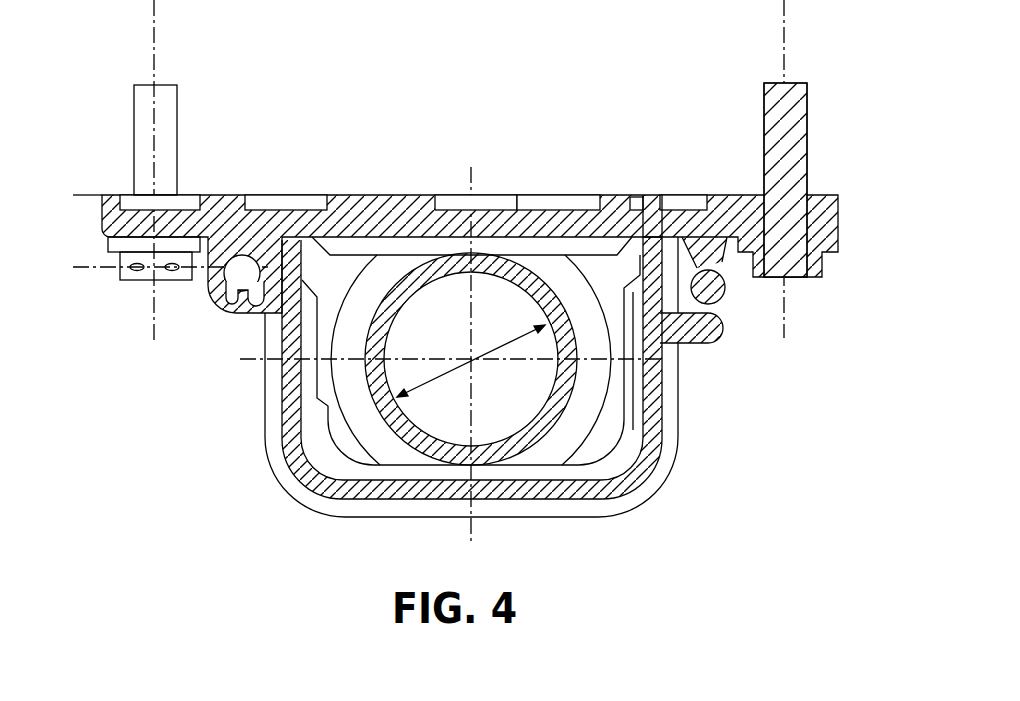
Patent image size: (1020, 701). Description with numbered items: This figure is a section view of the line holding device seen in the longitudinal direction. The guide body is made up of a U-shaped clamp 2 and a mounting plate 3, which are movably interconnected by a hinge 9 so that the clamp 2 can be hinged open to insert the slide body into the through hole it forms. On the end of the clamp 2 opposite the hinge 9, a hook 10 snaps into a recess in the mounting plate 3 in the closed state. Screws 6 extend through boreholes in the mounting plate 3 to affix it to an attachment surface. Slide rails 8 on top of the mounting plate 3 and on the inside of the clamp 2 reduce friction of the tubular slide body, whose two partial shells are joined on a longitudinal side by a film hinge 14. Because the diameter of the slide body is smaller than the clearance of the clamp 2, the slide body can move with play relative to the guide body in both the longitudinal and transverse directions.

The clamp 2 is at (648, 422).
The mounting plate 3 is at (455, 210).
The screws 6 is at (505, 138).
The slide rails 8 is at (499, 330).
The hinge 9 is at (218, 336).
The hook 10 is at (661, 154).
The film hinge 14 is at (365, 358).